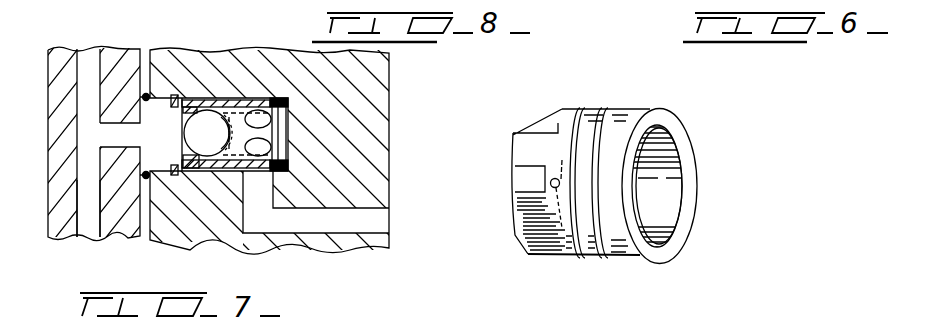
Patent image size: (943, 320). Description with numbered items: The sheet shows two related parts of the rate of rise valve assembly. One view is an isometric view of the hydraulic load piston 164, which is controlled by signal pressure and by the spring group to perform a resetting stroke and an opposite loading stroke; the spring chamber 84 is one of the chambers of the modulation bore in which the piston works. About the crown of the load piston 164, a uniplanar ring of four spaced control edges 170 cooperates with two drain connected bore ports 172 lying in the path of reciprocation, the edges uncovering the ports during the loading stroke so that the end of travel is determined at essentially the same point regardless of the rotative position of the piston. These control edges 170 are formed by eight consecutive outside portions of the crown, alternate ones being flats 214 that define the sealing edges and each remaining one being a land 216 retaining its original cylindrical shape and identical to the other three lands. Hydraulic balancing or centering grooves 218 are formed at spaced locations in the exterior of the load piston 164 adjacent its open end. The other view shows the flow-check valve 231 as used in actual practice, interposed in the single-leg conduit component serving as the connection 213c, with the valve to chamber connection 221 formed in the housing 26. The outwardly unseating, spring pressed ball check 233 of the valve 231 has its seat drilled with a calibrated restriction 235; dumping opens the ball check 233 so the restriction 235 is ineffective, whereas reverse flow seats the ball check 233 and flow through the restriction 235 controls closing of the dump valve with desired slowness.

In FIG. 8, the housing 26 is at (56, 95).
In FIG. 8, the connection 221 is at (88, 218).
In FIG. 8, the flow-check valve 231 is at (279, 98).
In FIG. 8, the ball check 233 is at (205, 126).
In FIG. 8, the calibrated restriction 235 is at (203, 108).
In FIG. 8, the connection 213c is at (343, 220).
In FIG. 6, the land 216 is at (522, 146).
In FIG. 6, the control edges 170 is at (561, 110).
In FIG. 6, the load piston 164 is at (640, 106).
In FIG. 6, the spring chamber 84 is at (662, 195).
In FIG. 6, the flats 214 is at (548, 212).
In FIG. 6, the bore ports 172 is at (558, 230).
In FIG. 6, the hydraulic balancing or centering grooves 218 is at (590, 262).